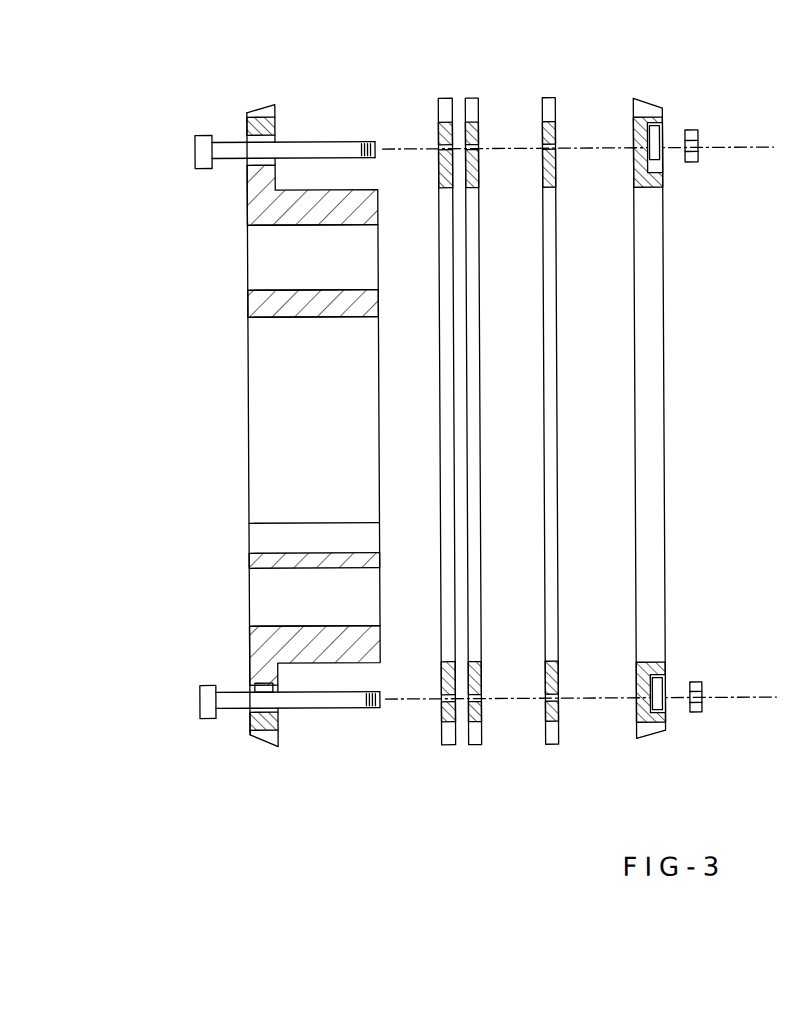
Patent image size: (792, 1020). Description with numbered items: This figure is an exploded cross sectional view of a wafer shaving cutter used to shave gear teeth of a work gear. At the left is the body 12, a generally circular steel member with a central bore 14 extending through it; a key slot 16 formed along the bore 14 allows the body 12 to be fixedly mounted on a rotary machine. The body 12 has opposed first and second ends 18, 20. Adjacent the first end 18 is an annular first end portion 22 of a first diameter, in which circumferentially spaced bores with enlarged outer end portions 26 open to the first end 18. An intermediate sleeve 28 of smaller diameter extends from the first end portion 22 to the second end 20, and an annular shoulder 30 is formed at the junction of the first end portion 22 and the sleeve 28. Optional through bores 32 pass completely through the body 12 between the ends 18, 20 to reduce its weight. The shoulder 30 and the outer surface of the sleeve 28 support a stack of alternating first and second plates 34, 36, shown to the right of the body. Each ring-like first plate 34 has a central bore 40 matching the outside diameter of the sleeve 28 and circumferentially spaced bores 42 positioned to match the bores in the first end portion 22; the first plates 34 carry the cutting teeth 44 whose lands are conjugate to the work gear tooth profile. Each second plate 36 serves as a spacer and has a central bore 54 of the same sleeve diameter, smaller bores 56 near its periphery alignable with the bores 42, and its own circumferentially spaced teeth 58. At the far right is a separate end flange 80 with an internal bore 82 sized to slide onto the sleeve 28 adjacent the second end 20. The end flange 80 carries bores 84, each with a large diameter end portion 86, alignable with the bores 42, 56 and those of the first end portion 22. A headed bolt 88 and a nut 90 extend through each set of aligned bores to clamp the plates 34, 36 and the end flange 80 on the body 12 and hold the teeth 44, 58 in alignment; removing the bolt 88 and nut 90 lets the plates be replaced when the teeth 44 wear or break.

The body 12 is at (247, 300).
The central bore 14 is at (265, 321).
The key slot 16 is at (279, 551).
The first end 18 is at (247, 241).
The second end 20 is at (386, 268).
The first end portion 22 is at (254, 118).
The enlarged outer end portion 26 is at (248, 132).
The intermediate sleeve 28 is at (317, 189).
The annular shoulder 30 is at (276, 112).
The through bore 32 is at (265, 290).
The first plate 34 is at (475, 747).
The second plate 36 is at (447, 747).
The central bore 40 is at (478, 662).
The bore 42 is at (481, 147).
The cutting tooth 44 is at (473, 98).
The central bore 54 is at (446, 662).
The bore 56 is at (440, 148).
The tooth 58 is at (446, 98).
The end flange 80 is at (648, 99).
The internal bore 82 is at (650, 192).
The bore 84 is at (635, 146).
The large diameter end portion 86 is at (657, 129).
The headed bolt 88 is at (290, 151).
The nut 90 is at (690, 129).